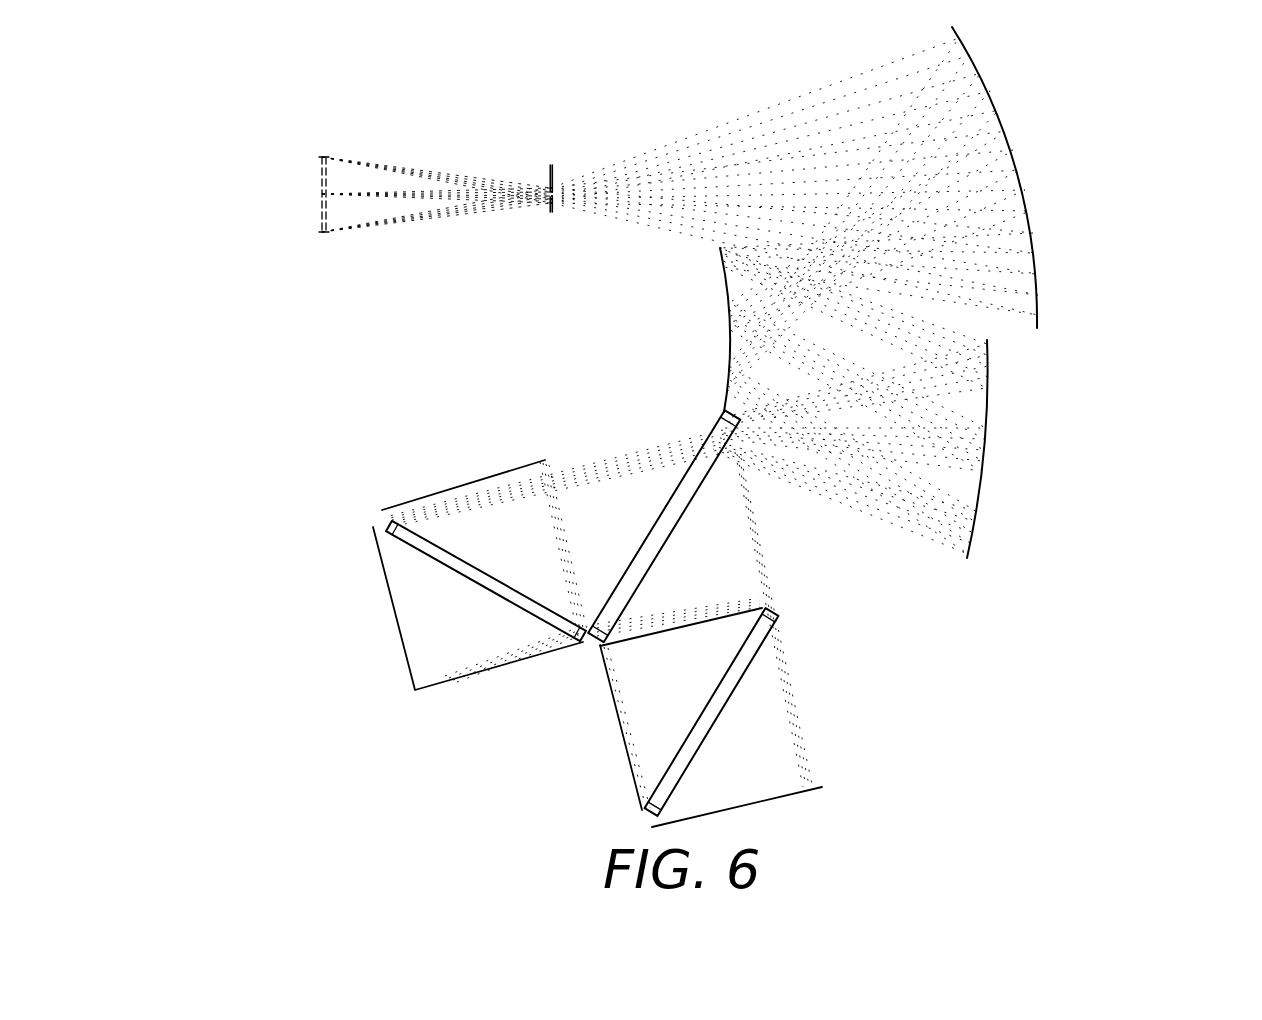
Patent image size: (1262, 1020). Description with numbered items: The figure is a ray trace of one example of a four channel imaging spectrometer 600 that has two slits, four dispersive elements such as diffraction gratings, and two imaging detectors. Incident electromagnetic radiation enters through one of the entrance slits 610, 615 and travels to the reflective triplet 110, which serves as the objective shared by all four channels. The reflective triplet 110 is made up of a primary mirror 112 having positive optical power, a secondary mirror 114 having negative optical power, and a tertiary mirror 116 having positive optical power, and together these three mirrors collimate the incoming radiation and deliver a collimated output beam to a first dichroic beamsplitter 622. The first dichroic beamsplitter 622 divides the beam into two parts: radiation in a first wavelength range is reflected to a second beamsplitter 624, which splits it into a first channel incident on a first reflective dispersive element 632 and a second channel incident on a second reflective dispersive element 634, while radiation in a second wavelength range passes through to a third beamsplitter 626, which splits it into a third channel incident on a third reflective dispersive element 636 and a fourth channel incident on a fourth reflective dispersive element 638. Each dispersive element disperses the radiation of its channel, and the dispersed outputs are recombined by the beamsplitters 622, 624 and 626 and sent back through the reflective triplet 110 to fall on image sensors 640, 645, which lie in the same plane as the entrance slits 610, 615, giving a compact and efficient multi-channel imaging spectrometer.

The four channel imaging spectrometer 600 is at (234, 96).
The entrance slit 610 is at (551, 165).
The entrance slit 615 is at (553, 165).
The image sensor 640 is at (551, 211).
The image sensor 645 is at (553, 211).
The reflective triplet 110 is at (932, 292).
The primary mirror 112 is at (1029, 185).
The secondary mirror 114 is at (729, 331).
The tertiary mirror 116 is at (1024, 449).
The first dichroic beamsplitter 622 is at (657, 556).
The second beamsplitter 624 is at (727, 673).
The third beamsplitter 626 is at (498, 598).
The first reflective dispersive element 632 is at (706, 812).
The second reflective dispersive element 634 is at (618, 727).
The third reflective dispersive element 636 is at (393, 594).
The fourth reflective dispersive element 638 is at (465, 487).